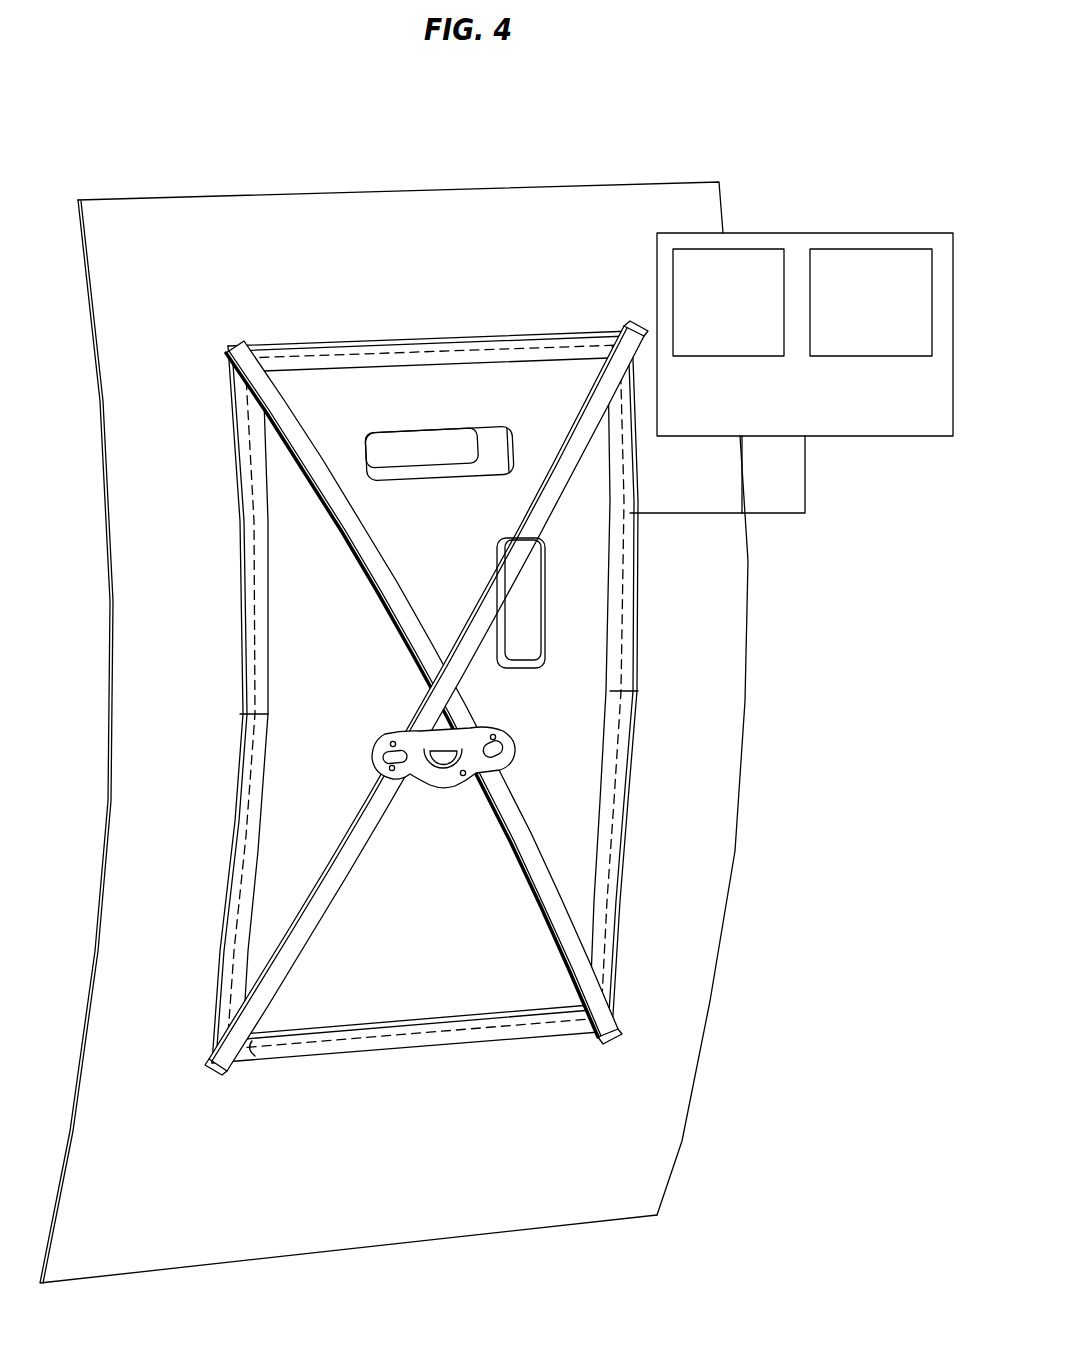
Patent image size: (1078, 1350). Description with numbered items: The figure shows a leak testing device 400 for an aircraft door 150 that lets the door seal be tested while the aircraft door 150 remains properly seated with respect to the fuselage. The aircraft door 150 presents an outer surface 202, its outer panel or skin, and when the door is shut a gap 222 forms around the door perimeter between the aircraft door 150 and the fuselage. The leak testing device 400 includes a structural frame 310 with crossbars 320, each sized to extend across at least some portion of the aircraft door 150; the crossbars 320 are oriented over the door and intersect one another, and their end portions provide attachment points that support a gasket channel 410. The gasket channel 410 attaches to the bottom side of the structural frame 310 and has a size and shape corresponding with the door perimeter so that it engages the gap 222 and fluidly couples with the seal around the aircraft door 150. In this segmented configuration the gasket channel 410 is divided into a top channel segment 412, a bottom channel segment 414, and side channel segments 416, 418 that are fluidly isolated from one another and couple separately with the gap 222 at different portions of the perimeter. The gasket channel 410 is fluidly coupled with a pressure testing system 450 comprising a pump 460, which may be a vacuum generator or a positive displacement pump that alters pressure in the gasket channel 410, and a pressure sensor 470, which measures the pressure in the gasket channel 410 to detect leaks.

The leak testing device 400 is at (757, 102).
The aircraft door 150 is at (578, 577).
The outer surface 202 is at (578, 824).
The gap 222 is at (313, 1043).
The structural frame 310 is at (368, 868).
The crossbars 320 is at (480, 643).
The gasket channel 410 is at (465, 1043).
The top channel segment 412 is at (417, 360).
The bottom channel segment 414 is at (420, 1015).
The side channel segment 416 is at (270, 568).
The side channel segment 418 is at (605, 737).
The pressure testing system 450 is at (787, 425).
The pump 460 is at (747, 333).
The pressure sensor 470 is at (857, 337).